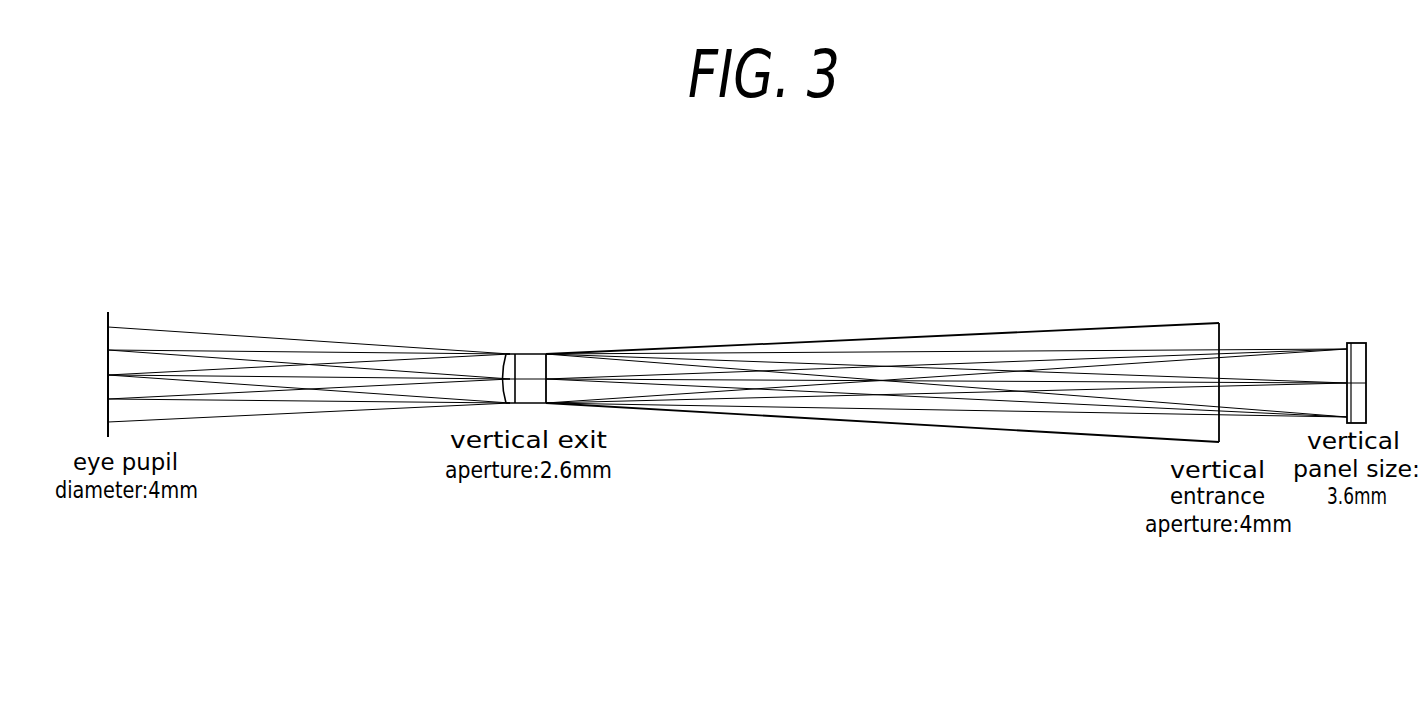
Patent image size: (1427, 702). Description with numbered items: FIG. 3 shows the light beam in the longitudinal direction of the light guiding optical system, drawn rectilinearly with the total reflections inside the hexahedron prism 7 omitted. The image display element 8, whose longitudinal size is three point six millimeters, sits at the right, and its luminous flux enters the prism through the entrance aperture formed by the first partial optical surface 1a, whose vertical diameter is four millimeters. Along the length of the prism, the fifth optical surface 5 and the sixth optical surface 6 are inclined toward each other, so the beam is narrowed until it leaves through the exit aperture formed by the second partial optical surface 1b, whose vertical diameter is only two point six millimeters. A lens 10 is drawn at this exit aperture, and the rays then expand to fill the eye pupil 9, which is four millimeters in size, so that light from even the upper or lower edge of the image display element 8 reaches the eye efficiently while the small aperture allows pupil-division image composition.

The eye pupil 9 is at (110, 318).
The lens 10 is at (527, 355).
The second partial optical surface 1b is at (548, 370).
The fifth optical surface 5 is at (828, 341).
The sixth optical surface 6 is at (822, 420).
The hexahedron prism 7 is at (946, 347).
The first partial optical surface 1a is at (1221, 333).
The image display element 8 is at (1357, 343).